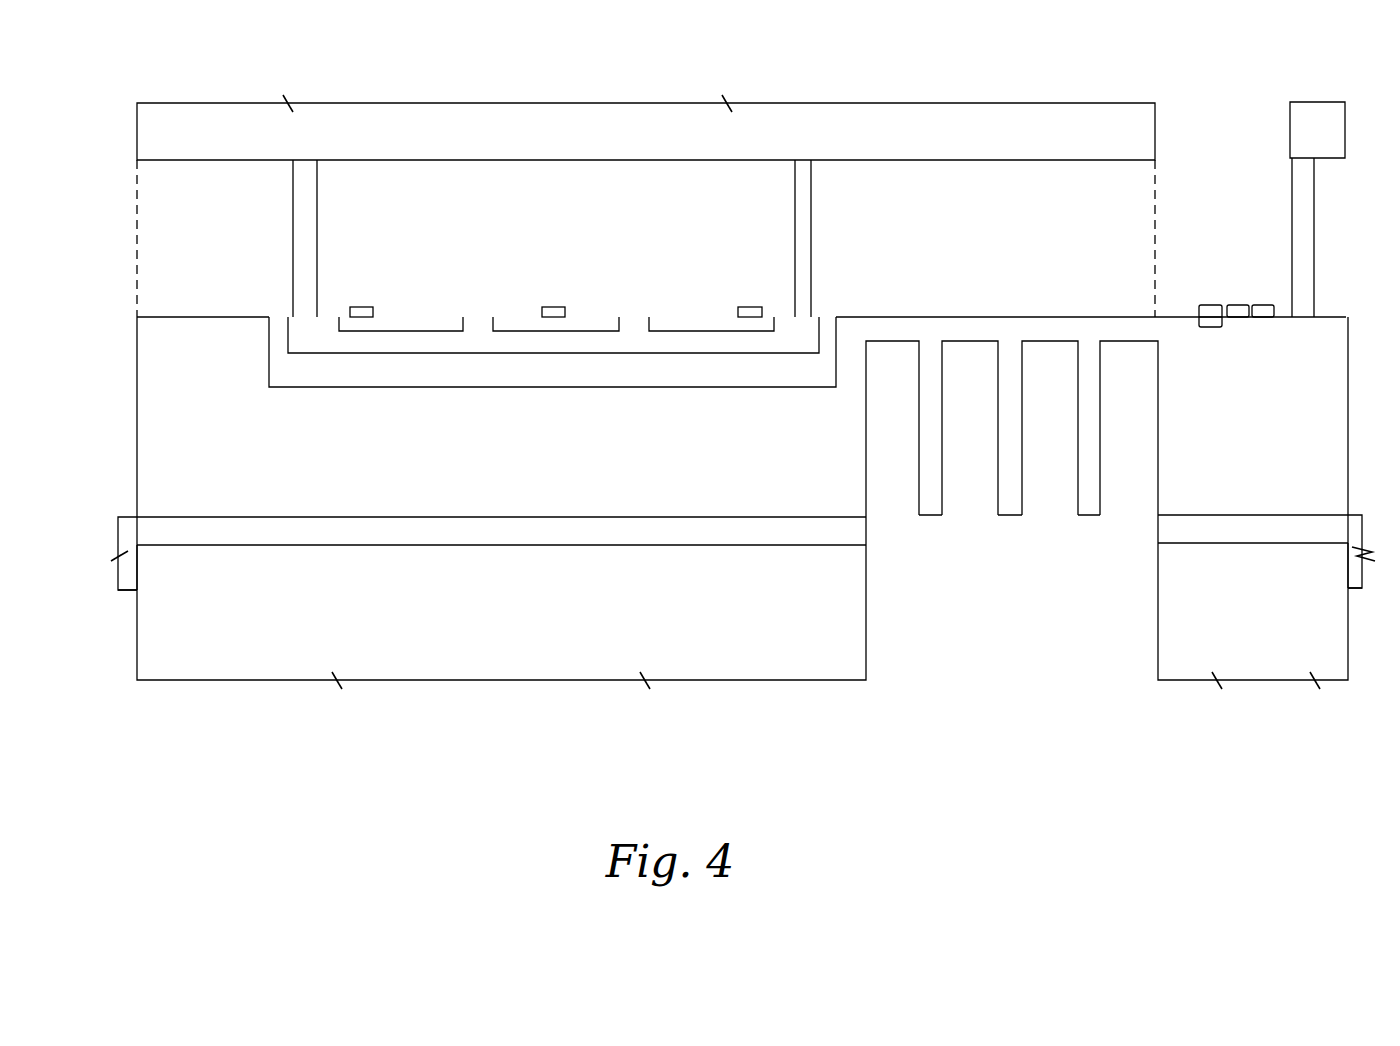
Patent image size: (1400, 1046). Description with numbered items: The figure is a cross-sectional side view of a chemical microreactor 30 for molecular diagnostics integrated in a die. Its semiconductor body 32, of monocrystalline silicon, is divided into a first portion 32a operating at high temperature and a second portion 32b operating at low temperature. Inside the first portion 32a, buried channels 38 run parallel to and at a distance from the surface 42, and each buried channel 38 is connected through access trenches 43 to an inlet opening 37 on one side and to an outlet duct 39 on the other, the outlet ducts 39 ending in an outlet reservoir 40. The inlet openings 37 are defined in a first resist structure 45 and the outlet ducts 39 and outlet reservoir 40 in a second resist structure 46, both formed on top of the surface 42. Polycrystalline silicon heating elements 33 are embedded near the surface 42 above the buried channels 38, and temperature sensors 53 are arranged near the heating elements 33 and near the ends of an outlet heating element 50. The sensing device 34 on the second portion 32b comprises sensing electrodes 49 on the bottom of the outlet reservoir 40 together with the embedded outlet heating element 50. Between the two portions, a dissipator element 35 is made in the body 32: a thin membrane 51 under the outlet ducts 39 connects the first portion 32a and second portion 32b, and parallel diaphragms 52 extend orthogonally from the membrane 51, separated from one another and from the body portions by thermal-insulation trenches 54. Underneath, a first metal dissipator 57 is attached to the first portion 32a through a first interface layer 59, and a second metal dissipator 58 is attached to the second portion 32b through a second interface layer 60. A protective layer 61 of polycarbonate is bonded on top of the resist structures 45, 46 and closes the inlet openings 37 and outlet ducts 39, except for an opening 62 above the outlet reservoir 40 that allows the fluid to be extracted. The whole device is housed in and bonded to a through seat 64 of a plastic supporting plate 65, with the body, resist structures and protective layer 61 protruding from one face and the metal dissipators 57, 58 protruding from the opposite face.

The chemical microreactor 30 is at (993, 697).
The semiconductor body 32 is at (1356, 356).
The first portion of the semiconductor body 32a is at (186, 491).
The second portion of the semiconductor body 32b is at (1263, 499).
The heating elements 33 is at (518, 325).
The sensing device 34 is at (1245, 355).
The dissipator element 35 is at (1004, 560).
The inlet openings 37 is at (172, 231).
The buried channels 38 is at (591, 384).
The outlet ducts 39 is at (1120, 198).
The outlet reservoir 40 is at (1211, 147).
The surface of the semiconductor body 42 is at (1328, 304).
The access trenches 43 is at (278, 321).
The first resist structure 45 is at (314, 210).
The second resist structure 46 is at (811, 272).
The sensing electrodes 49 is at (1263, 305).
The outlet heating element 50 is at (1212, 330).
The membrane 51 is at (973, 332).
The diaphragms 52 is at (933, 508).
The temperature sensors 53 is at (365, 307).
The thermal-insulation trenches 54 is at (877, 414).
The first metal dissipator 57 is at (700, 655).
The second metal dissipator 58 is at (1258, 660).
The first interface layer 59 is at (855, 530).
The second interface layer 60 is at (1180, 530).
The protective layer 61 is at (178, 149).
The opening 62 is at (1204, 100).
The through seat 64 is at (155, 560).
The supporting plate 65 is at (125, 585).